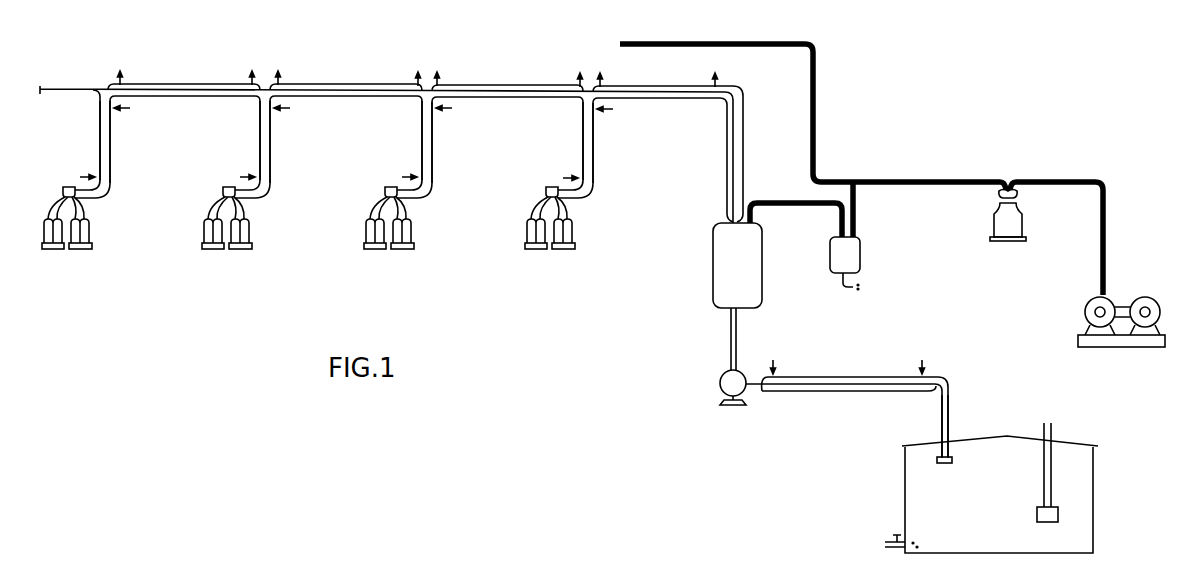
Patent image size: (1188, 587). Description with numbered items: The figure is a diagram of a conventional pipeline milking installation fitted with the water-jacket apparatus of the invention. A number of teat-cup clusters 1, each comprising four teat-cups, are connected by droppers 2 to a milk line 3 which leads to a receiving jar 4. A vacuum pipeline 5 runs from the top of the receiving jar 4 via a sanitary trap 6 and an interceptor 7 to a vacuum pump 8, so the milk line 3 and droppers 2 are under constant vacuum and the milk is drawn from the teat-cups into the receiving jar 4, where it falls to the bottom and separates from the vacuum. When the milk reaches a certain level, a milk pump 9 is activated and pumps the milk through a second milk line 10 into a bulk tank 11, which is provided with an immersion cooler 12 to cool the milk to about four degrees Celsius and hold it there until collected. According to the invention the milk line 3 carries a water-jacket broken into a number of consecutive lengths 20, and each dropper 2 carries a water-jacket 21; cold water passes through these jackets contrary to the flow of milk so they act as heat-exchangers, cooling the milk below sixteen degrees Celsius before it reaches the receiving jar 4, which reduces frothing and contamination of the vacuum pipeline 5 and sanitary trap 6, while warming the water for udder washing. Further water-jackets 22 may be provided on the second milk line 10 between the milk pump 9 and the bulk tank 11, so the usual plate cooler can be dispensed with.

The teat-cup cluster 1 is at (93, 232).
The dropper 2 is at (105, 191).
The milk line 3 is at (64, 87).
The receiving jar 4 is at (713, 281).
The vacuum pipeline 5 is at (733, 42).
The sanitary trap 6 is at (862, 258).
The interceptor 7 is at (994, 222).
The vacuum pump 8 is at (1085, 312).
The milk pump 9 is at (720, 385).
The second milk line 10 is at (951, 397).
The bulk tank 11 is at (905, 500).
The immersion cooler 12 is at (1062, 512).
The water-jacket lengths 20 is at (191, 84).
The water-jacket 21 is at (112, 140).
The further water-jackets 22 is at (818, 393).